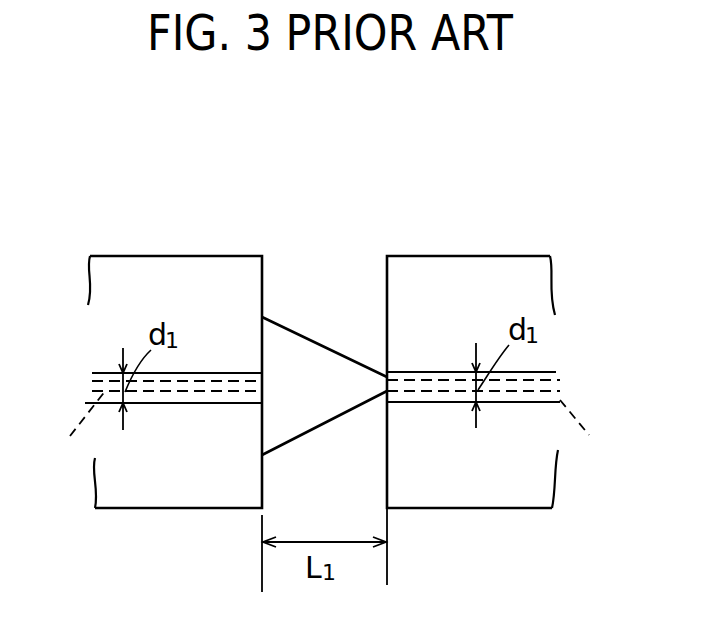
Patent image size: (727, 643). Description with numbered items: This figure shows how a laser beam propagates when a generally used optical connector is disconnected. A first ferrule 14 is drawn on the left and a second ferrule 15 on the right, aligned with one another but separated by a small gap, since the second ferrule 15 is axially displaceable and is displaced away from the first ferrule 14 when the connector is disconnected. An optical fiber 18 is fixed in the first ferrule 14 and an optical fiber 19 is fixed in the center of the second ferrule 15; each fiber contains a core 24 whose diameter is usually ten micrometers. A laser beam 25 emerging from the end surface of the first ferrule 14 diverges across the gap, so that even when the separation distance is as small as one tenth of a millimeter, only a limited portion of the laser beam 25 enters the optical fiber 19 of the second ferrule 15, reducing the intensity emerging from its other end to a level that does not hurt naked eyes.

The first ferrule 14 is at (457, 252).
The second ferrule 15 is at (165, 252).
The optical fiber 18 is at (510, 408).
The optical fiber 19 is at (188, 408).
The core 24 is at (327, 430).
The laser beam 25 is at (307, 334).